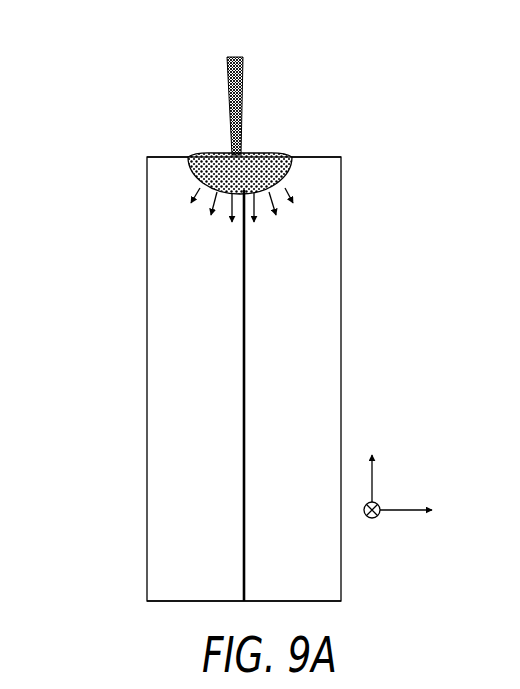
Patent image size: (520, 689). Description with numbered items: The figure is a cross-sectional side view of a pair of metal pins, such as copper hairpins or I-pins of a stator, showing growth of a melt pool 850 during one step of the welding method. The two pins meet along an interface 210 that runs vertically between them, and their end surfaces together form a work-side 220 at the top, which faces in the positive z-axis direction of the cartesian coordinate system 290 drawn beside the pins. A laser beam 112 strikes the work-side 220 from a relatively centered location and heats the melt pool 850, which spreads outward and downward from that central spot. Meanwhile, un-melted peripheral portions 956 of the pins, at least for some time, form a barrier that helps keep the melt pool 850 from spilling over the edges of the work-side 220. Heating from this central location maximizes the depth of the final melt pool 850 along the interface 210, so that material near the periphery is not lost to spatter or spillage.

The work-side 220 is at (177, 115).
The un-melted peripheral portions 956 is at (158, 165).
The laser beam 112 is at (242, 92).
The melt pool 850 is at (267, 157).
The interface 210 is at (245, 295).
The cartesian coordinate system 290 is at (398, 530).